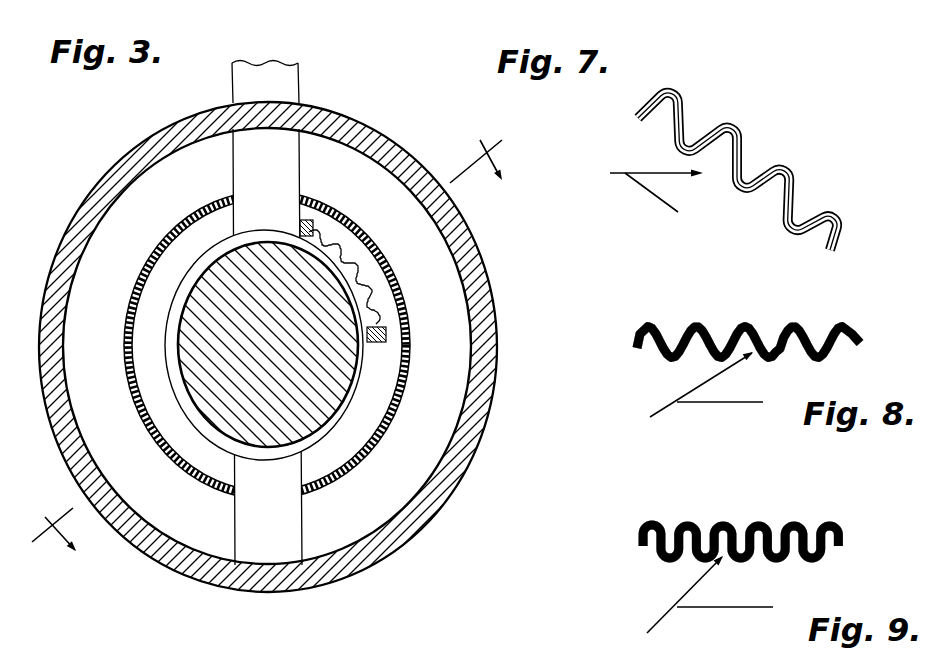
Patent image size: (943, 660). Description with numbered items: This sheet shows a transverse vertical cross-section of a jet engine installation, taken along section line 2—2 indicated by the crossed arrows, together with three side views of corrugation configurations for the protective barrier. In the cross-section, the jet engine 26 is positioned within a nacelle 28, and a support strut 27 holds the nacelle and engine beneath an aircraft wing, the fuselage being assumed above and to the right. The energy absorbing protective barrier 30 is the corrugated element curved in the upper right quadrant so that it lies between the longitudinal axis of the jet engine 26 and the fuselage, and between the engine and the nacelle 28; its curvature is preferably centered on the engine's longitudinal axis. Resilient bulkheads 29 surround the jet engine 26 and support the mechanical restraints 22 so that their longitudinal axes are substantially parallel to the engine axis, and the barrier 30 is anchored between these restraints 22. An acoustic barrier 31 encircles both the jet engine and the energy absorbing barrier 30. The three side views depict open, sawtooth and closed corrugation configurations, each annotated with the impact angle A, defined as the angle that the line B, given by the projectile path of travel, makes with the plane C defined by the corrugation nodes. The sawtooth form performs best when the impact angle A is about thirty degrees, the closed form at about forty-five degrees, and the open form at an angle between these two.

In FIG. 3, the section line 2— 2 is at (261, 341).
In FIG. 3, the mechanical restraints 22 is at (306, 220).
In FIG. 3, the jet engine 26 is at (313, 412).
In FIG. 3, the support strut 27 is at (300, 77).
In FIG. 3, the nacelle 28 is at (380, 133).
In FIG. 3, the resilient bulkheads 29 is at (353, 392).
In FIG. 3, the energy absorbing protective barrier 30 is at (366, 262).
In FIG. 3, the acoustic barrier 31 is at (155, 345).
In FIG. 7, the impact angle A is at (656, 183).
In FIG. 8, the impact angle A is at (701, 384).
In FIG. 9, the impact angle A is at (685, 594).
In FIG. 7, the projectile path line B is at (620, 174).
In FIG. 8, the projectile path line B is at (665, 407).
In FIG. 9, the projectile path line B is at (660, 622).
In FIG. 7, the corrugation node plane C is at (665, 208).
In FIG. 8, the corrugation node plane C is at (730, 402).
In FIG. 9, the corrugation node plane C is at (742, 607).